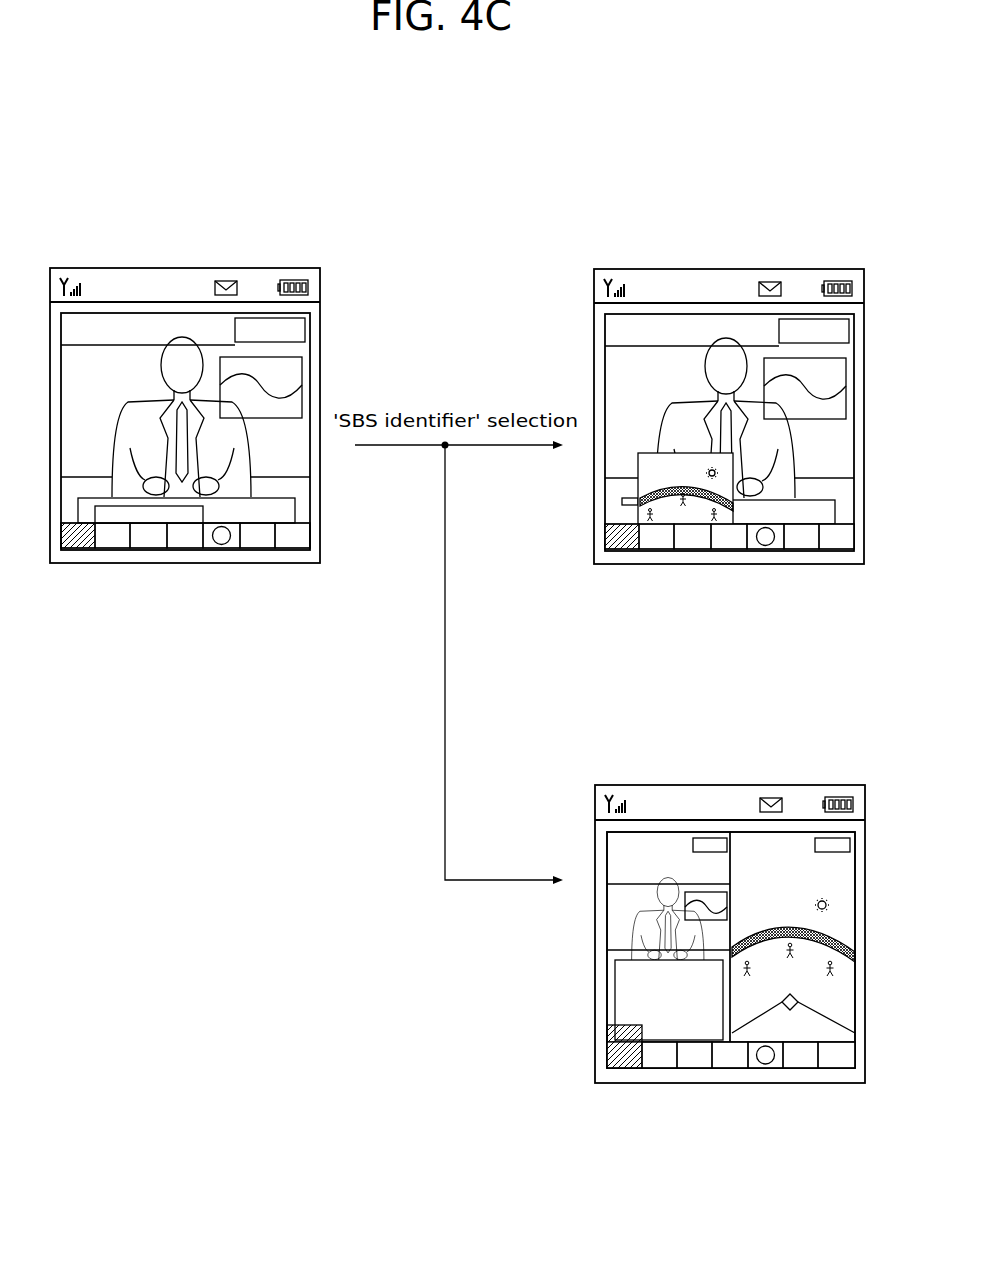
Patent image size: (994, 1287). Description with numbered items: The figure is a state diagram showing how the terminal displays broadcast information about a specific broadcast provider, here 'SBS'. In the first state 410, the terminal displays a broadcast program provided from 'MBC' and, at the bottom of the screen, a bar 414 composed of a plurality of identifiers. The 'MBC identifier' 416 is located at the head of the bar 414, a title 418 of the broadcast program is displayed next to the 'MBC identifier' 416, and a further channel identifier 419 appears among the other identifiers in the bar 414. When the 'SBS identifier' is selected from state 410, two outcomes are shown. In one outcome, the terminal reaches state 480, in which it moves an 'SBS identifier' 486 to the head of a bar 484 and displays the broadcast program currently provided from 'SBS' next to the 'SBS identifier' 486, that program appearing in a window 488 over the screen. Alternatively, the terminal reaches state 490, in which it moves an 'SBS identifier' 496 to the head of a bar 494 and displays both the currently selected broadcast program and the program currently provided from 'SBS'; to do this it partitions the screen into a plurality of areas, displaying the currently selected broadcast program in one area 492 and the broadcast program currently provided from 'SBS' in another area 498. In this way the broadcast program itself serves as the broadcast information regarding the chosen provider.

The state displaying MBC broadcast program 410 is at (185, 420).
The bar 414 is at (185, 582).
The MBC identifier 416 is at (75, 566).
The title of the broadcast program 418 is at (153, 561).
The MBC channel identifier 419 is at (110, 582).
The state displaying SBS broadcast program next to SBS identifier 480 is at (729, 420).
The bar 484 is at (729, 583).
The SBS identifier 486 is at (618, 567).
The pop-up window showing SBS broadcast 488 is at (685, 535).
The state displaying selected program and SBS program 490 is at (731, 938).
The area displaying currently selected broadcast program 492 is at (634, 937).
The bar 494 is at (731, 1100).
The SBS identifier 496 is at (621, 1076).
The area displaying SBS broadcast program 498 is at (827, 937).